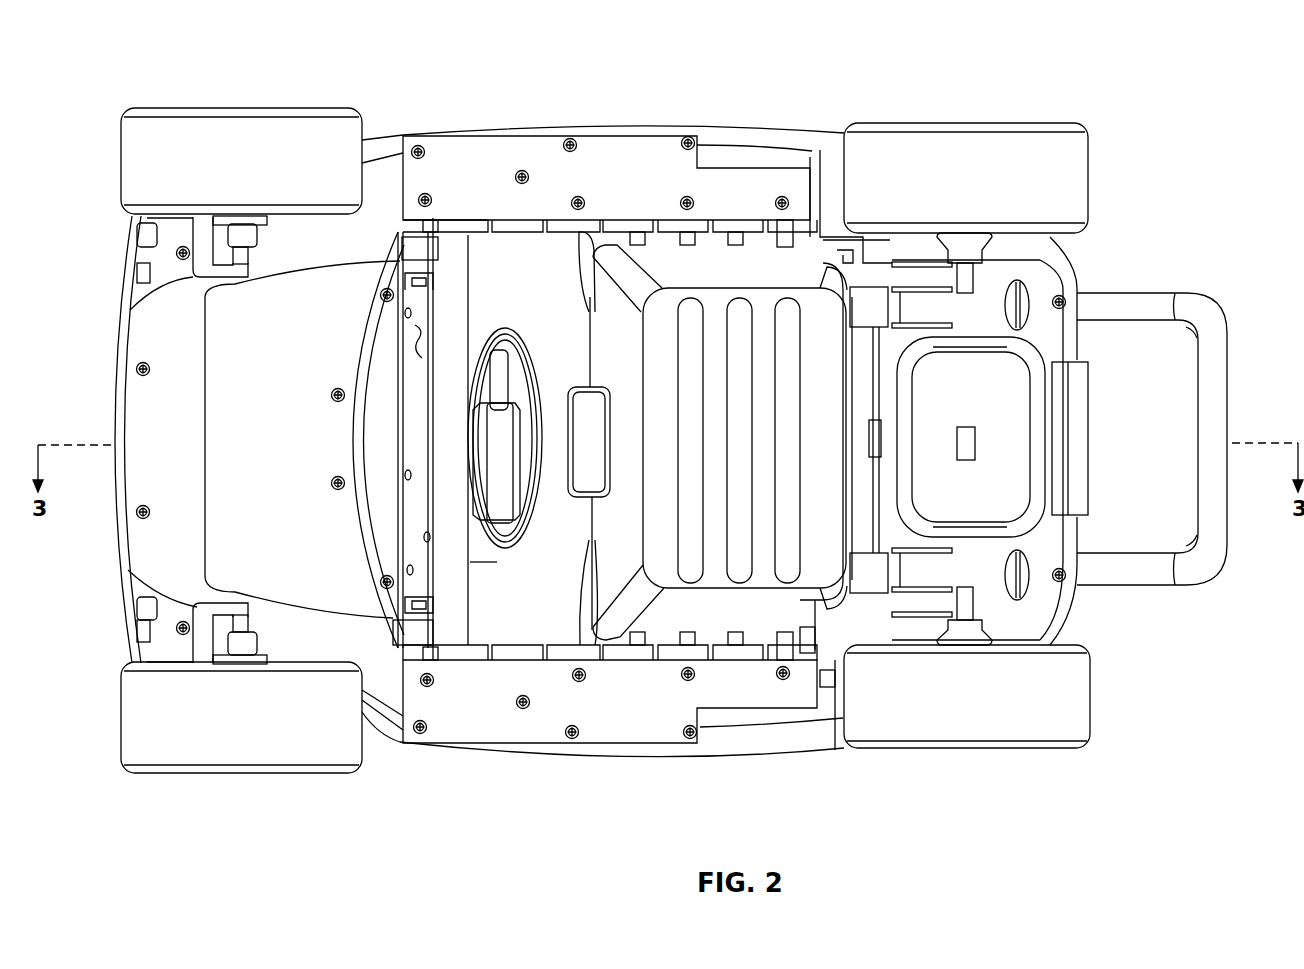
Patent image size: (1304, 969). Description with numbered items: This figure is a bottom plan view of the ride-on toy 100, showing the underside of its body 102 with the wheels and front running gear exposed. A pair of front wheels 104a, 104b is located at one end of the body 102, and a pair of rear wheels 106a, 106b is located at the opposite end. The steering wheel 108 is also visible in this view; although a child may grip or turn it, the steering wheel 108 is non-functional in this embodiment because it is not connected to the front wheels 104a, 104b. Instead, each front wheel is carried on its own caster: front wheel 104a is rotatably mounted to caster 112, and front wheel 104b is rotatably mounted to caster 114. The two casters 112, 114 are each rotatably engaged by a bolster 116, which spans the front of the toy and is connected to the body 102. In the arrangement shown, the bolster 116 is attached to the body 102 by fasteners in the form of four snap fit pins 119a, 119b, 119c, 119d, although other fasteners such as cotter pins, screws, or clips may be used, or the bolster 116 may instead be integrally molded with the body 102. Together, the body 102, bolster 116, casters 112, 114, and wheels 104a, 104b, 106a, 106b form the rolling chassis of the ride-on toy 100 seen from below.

The ride-on toy 100 is at (124, 72).
The body 102 is at (385, 737).
The front wheel 104a is at (242, 108).
The front wheel 104b is at (245, 775).
The rear wheel 106a is at (965, 122).
The rear wheel 106b is at (968, 755).
The steering wheel 108 is at (500, 328).
The caster 112 is at (190, 270).
The caster 114 is at (197, 607).
The bolster 116 is at (147, 445).
The snap fit pin 119a is at (178, 250).
The snap fit pin 119b is at (138, 365).
The snap fit pin 119c is at (138, 517).
The snap fit pin 119d is at (178, 632).